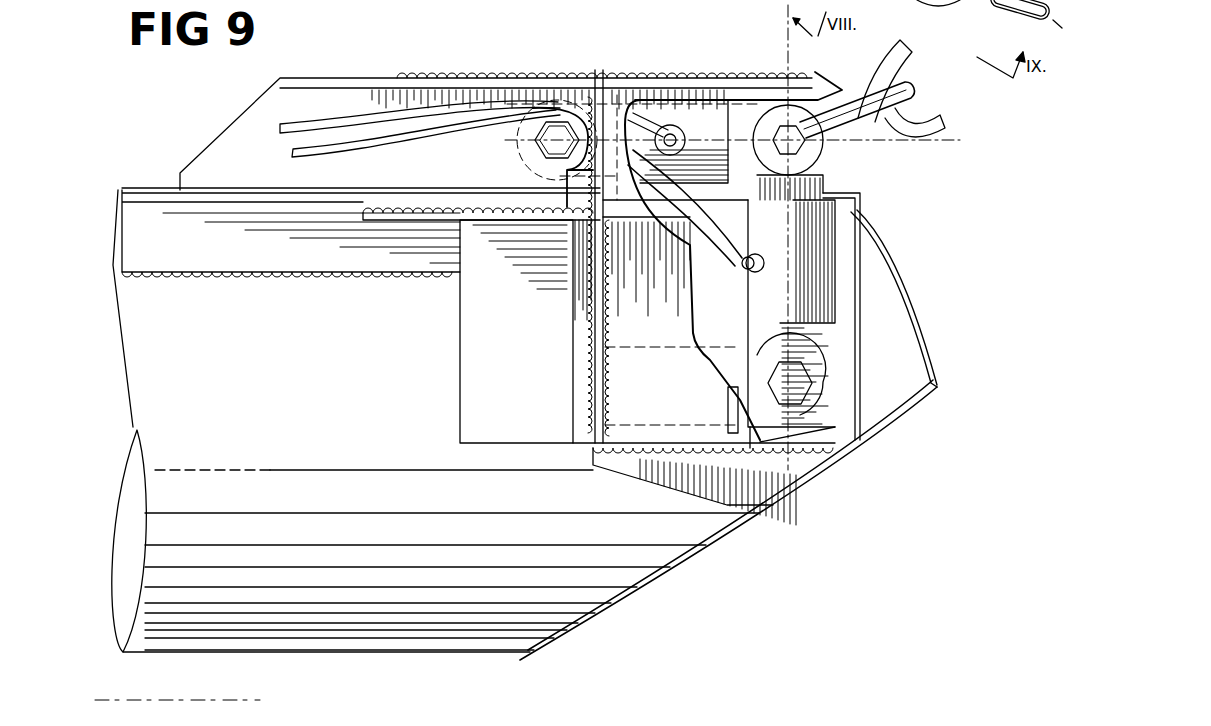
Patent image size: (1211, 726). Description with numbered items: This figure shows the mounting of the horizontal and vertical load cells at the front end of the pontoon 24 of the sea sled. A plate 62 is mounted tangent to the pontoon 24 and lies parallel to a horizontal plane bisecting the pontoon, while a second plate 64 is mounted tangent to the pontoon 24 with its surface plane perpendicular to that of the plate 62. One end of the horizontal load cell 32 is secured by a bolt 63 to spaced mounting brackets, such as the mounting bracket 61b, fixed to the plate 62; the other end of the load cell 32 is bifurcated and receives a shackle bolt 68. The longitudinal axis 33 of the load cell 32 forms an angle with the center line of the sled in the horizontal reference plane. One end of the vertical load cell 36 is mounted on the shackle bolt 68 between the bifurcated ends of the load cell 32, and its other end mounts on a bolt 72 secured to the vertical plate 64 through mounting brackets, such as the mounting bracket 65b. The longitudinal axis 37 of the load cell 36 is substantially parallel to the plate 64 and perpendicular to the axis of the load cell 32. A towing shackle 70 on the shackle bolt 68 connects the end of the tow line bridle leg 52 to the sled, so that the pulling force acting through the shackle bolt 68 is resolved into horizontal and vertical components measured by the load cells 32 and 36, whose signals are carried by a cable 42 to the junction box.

The pontoon 24 is at (685, 558).
The horizontal load cell 32 is at (660, 108).
The longitudinal axis 33 is at (691, 115).
The vertical load cell 36 is at (813, 297).
The longitudinal axis 37 is at (775, 222).
The cable 42 is at (347, 143).
The tow line bridle leg 52 is at (940, 140).
The mounting bracket 61b is at (233, 127).
The plate 62 is at (150, 170).
The bolt 63 is at (535, 145).
The plate 64 is at (850, 217).
The mounting bracket 65b is at (740, 326).
The shackle bolt 68 is at (805, 153).
The towing shackle 70 is at (845, 110).
The bolt 72 is at (800, 383).